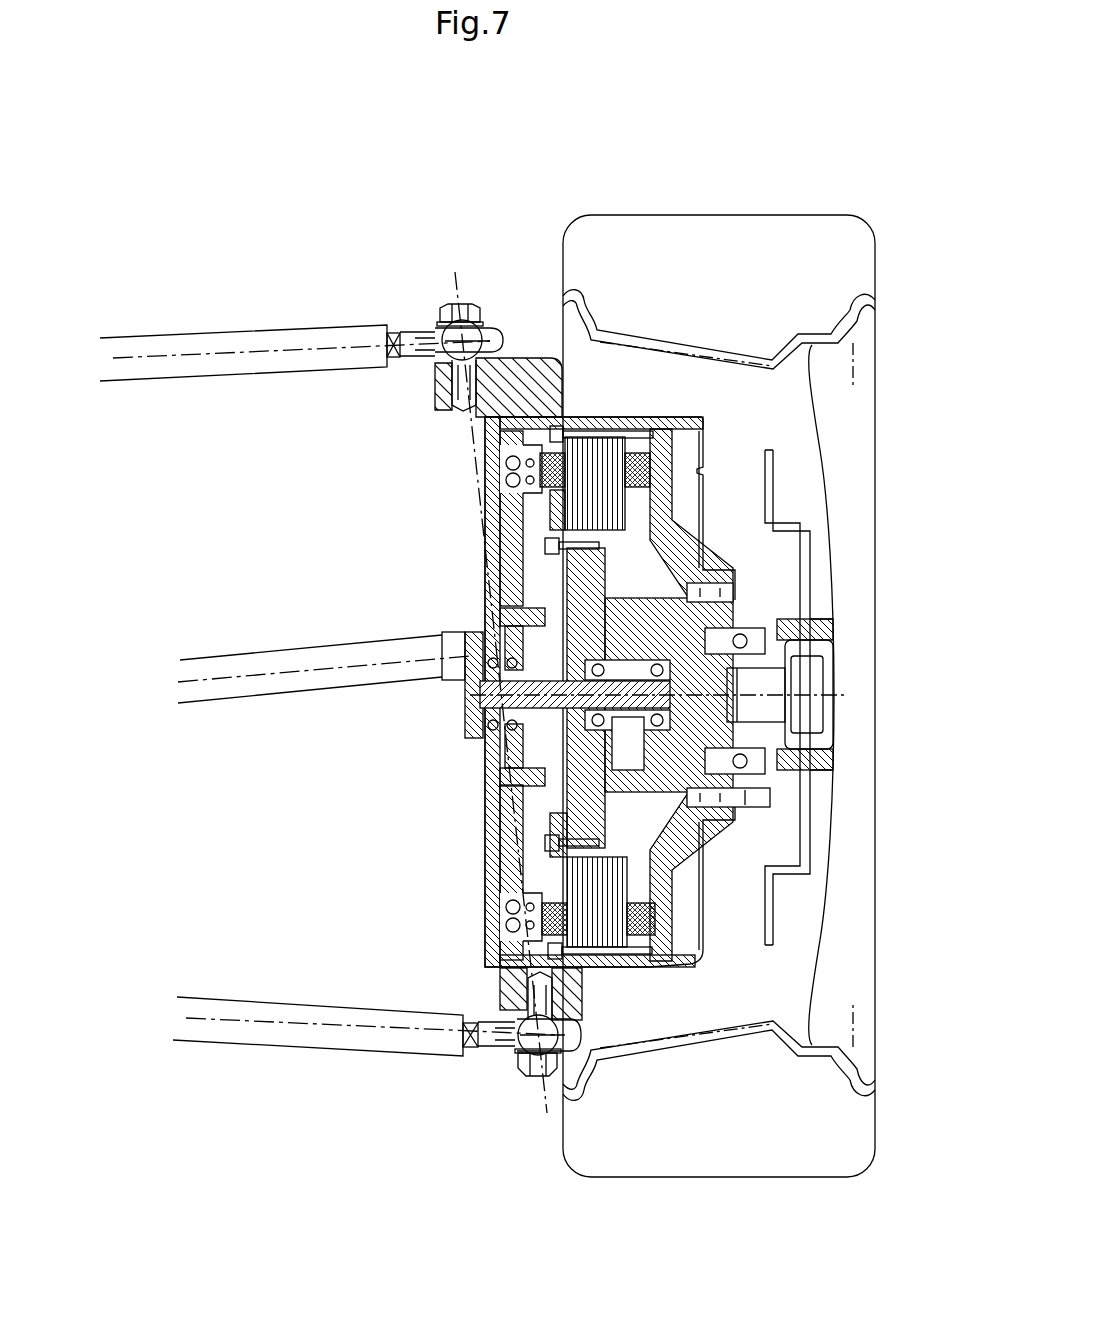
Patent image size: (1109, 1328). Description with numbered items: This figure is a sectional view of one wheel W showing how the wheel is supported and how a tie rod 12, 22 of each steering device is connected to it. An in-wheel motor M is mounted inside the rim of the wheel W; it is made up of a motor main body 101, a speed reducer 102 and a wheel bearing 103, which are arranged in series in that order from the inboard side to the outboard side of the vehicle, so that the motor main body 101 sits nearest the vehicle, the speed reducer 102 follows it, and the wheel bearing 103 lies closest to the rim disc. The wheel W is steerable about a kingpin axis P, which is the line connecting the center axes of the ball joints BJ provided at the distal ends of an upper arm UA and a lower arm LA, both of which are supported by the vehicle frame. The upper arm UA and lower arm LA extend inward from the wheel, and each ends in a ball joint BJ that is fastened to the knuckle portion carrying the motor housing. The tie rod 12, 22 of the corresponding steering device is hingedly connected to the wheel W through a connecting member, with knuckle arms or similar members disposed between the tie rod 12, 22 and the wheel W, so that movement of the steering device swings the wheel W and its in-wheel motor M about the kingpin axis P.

The wheel W is at (773, 200).
The upper arm UA is at (268, 343).
The lower arm LA is at (327, 1012).
The ball joint BJ is at (467, 333).
The kingpin axis P is at (472, 433).
The in-wheel motor M is at (615, 827).
The motor main body 101 is at (540, 512).
The speed reducer 102 is at (626, 735).
The wheel bearing 103 is at (765, 825).
The tie rod 12 is at (324, 723).
The tie rod 22 is at (302, 678).